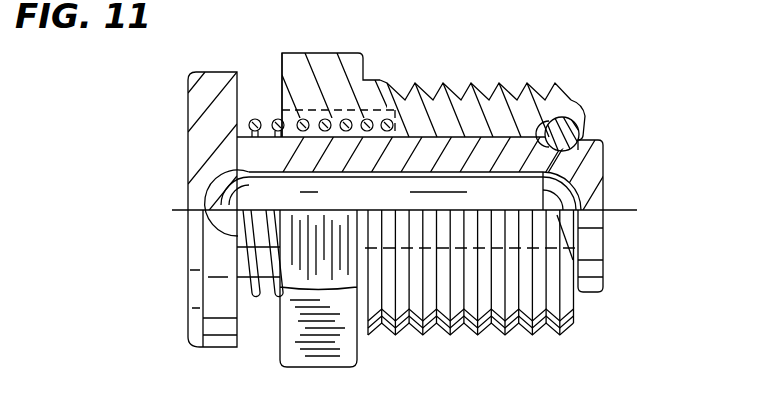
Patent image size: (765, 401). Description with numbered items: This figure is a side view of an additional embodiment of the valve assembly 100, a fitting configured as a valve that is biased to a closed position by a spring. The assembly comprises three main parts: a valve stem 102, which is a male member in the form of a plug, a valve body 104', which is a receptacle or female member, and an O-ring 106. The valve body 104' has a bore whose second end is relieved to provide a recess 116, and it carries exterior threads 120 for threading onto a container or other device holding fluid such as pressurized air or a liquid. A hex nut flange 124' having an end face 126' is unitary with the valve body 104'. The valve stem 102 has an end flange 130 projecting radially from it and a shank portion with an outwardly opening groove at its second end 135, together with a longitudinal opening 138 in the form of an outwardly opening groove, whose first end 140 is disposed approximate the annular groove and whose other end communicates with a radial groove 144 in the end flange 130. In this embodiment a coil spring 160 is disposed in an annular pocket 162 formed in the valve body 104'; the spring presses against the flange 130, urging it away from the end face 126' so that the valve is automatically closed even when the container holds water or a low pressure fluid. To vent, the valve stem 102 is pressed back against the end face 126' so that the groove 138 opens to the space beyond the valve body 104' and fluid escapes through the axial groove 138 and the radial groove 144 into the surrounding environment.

The valve assembly 100 is at (528, 87).
The valve stem 102 is at (600, 136).
The valve body 104' is at (475, 83).
The O-ring 106 is at (566, 118).
The recess 116 is at (523, 138).
The exterior threads 120 is at (500, 337).
The hex nut flange 124' is at (350, 77).
The end face 126' is at (307, 73).
The end flange 130 is at (208, 68).
The second end 135 is at (533, 180).
The longitudinal opening 138 is at (394, 203).
The first end 140 is at (563, 205).
The radial groove 144 is at (228, 218).
The coil spring 160 is at (255, 117).
The annular pocket 162 is at (374, 82).